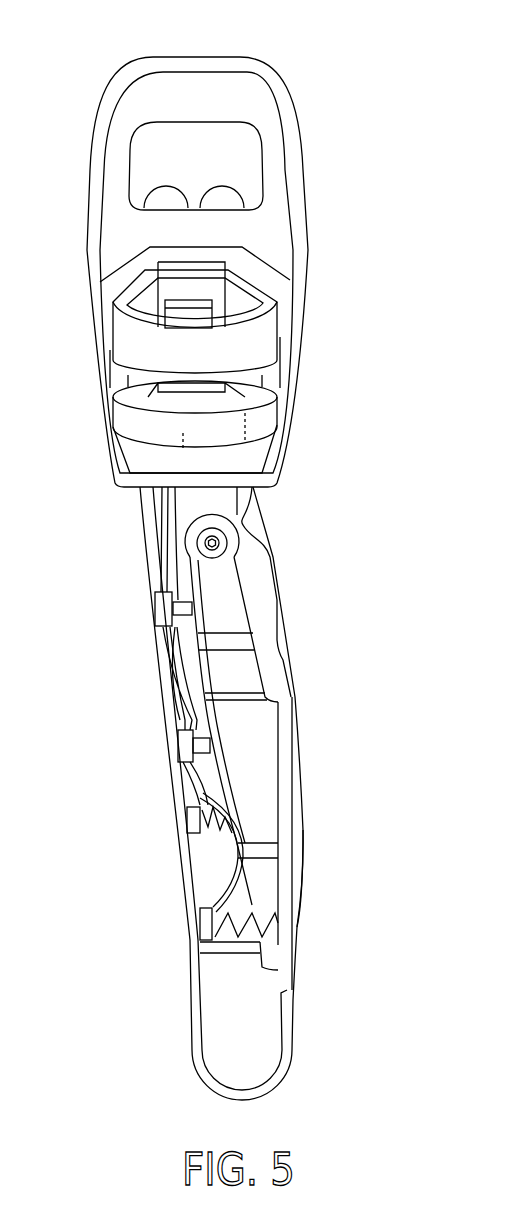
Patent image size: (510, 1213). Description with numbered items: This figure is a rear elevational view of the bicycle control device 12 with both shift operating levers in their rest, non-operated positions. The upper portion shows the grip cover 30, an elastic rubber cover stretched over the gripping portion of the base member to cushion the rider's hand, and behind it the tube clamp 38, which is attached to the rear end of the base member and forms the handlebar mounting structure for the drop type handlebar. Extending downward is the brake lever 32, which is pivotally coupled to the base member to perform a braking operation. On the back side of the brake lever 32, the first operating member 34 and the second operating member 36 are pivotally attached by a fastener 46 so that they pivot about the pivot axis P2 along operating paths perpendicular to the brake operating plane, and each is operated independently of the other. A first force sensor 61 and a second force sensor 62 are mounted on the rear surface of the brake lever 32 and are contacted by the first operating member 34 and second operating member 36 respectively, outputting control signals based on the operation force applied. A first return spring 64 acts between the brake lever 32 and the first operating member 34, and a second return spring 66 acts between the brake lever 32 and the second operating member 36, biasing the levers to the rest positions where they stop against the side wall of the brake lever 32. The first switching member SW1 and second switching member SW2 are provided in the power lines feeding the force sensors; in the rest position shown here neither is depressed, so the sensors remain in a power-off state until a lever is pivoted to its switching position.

The bicycle control device 12 is at (76, 68).
The grip cover 30 is at (286, 84).
The brake lever 32 is at (192, 1027).
The first operating member 34 is at (289, 780).
The second operating member 36 is at (287, 633).
The tube clamp 38 is at (137, 343).
The fastener 46 is at (223, 552).
The pivot axis P2 is at (203, 542).
The first switching member SW1 is at (163, 608).
The second switching member SW2 is at (183, 745).
The first force sensor 61 is at (205, 900).
The second force sensor 62 is at (194, 797).
The first return spring 64 is at (235, 954).
The second return spring 66 is at (238, 843).